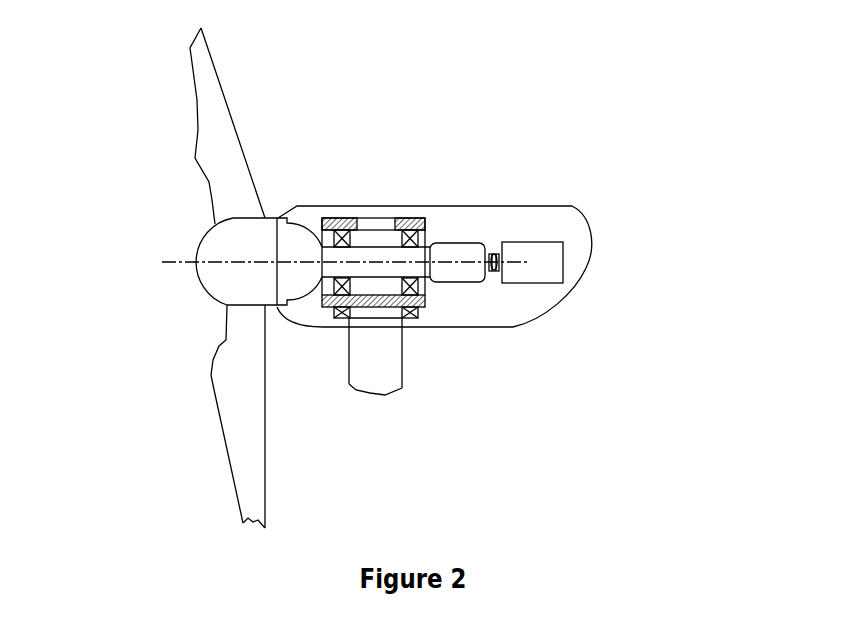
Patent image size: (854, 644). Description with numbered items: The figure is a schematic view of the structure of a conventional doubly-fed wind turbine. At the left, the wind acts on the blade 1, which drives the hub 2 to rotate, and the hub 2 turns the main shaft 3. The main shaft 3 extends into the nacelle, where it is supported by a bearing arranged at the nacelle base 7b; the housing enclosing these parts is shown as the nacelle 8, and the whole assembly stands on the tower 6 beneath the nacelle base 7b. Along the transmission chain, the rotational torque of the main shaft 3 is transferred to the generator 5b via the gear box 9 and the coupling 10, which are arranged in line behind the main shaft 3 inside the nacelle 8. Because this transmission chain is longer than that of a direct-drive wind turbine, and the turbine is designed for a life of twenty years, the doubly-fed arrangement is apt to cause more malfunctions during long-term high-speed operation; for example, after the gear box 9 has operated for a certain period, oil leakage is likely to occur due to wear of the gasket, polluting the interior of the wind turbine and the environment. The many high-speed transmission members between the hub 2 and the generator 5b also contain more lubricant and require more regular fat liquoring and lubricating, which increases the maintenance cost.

The blade 1 is at (218, 130).
The hub 2 is at (240, 287).
The main shaft 3 is at (295, 263).
The generator 5b is at (563, 243).
The tower 6 is at (382, 360).
The nacelle base 7b is at (337, 313).
The nacelle 8 is at (547, 297).
The gear box 9 is at (437, 272).
The coupling 10 is at (500, 257).